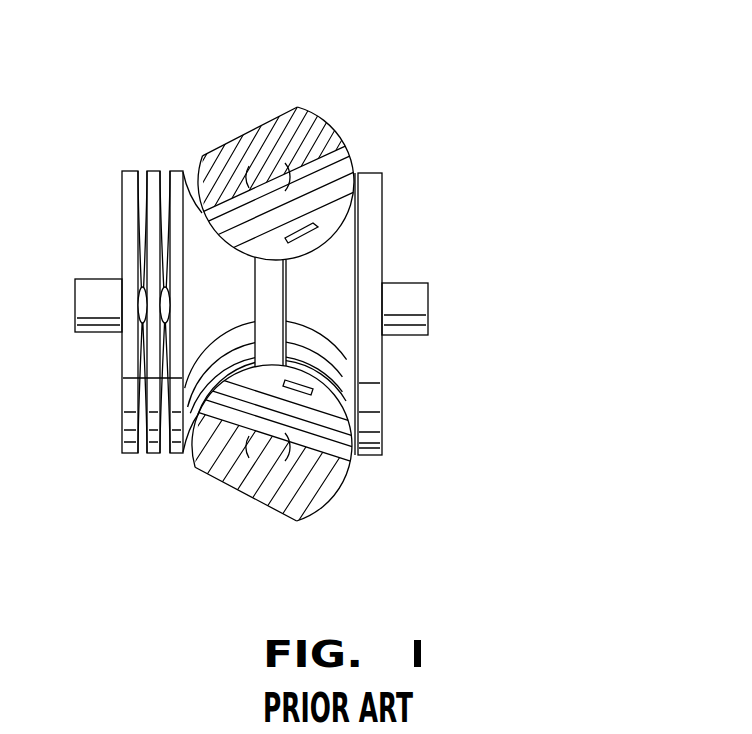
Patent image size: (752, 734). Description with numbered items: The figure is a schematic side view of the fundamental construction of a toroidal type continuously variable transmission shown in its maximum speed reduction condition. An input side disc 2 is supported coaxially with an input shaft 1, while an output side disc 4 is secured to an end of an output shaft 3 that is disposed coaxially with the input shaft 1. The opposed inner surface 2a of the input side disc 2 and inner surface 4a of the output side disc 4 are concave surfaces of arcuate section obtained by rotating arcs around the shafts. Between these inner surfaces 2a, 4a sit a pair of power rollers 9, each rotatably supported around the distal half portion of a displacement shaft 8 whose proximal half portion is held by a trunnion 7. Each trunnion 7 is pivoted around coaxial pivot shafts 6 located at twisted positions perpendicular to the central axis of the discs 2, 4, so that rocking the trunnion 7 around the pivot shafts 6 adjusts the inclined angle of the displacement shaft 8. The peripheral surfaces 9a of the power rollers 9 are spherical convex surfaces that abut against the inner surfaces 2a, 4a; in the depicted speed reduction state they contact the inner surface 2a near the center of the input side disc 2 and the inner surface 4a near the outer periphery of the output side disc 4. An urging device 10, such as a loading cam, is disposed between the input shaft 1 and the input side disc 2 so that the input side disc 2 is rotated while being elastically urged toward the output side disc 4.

The input shaft 1 is at (84, 297).
The input side disc 2 is at (182, 172).
The inner surface of the input side disc 2a is at (212, 458).
The output shaft 3 is at (421, 297).
The output side disc 4 is at (374, 191).
The inner surface of the output side disc 4a is at (352, 403).
The pivot shaft 6 is at (254, 160).
The trunnion 7 is at (313, 114).
The displacement shaft 8 is at (298, 388).
The power roller 9 is at (350, 162).
The peripheral surface of the power roller 9a is at (235, 246).
The urging device 10 is at (130, 163).